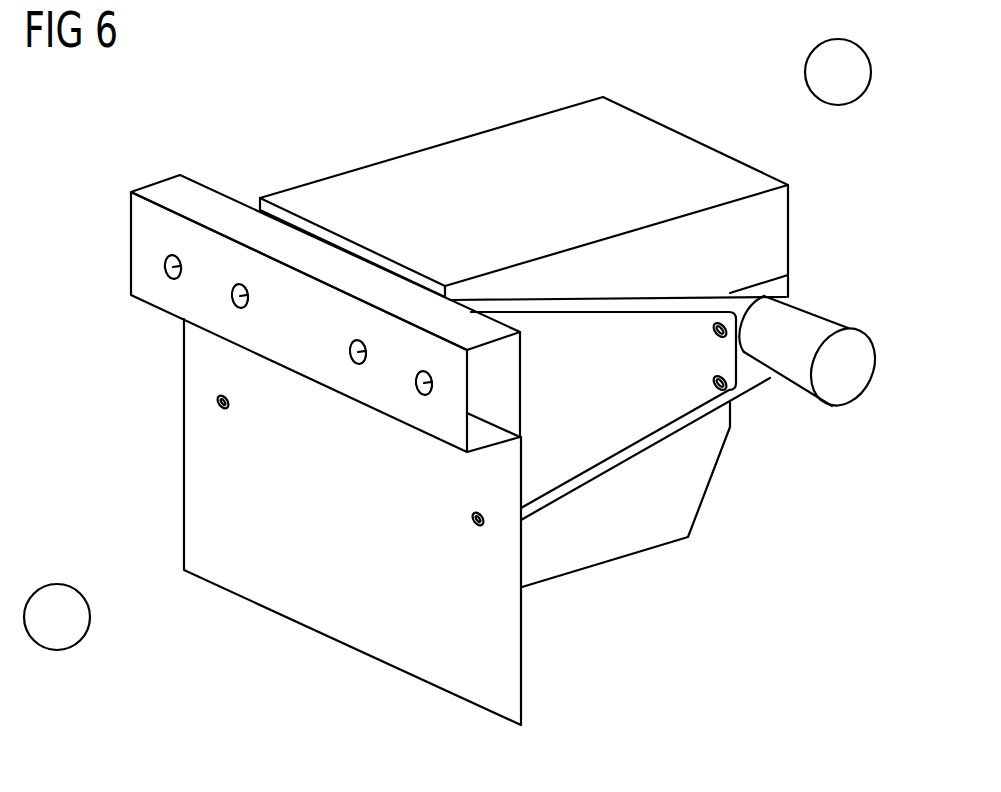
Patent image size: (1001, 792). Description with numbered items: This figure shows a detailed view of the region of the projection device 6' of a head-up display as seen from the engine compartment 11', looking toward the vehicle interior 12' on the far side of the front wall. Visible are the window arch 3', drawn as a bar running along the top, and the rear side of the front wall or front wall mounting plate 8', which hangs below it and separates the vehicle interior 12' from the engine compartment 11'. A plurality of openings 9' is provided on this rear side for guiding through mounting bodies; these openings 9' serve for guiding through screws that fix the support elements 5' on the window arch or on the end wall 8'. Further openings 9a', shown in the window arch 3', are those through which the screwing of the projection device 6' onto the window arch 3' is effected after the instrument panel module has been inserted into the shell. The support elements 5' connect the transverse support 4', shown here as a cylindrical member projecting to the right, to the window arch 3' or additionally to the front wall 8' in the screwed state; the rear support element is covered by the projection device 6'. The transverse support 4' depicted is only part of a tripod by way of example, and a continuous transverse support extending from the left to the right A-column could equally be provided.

The window arch 3' is at (299, 313).
The transverse support 4' is at (835, 356).
The support elements 5' is at (620, 449).
The projection device 6' is at (553, 198).
The front wall mounting plate 8' is at (352, 522).
The openings 9' is at (446, 409).
The openings 9a' is at (298, 324).
The engine compartment 11' is at (57, 617).
The vehicle interior 12' is at (838, 72).